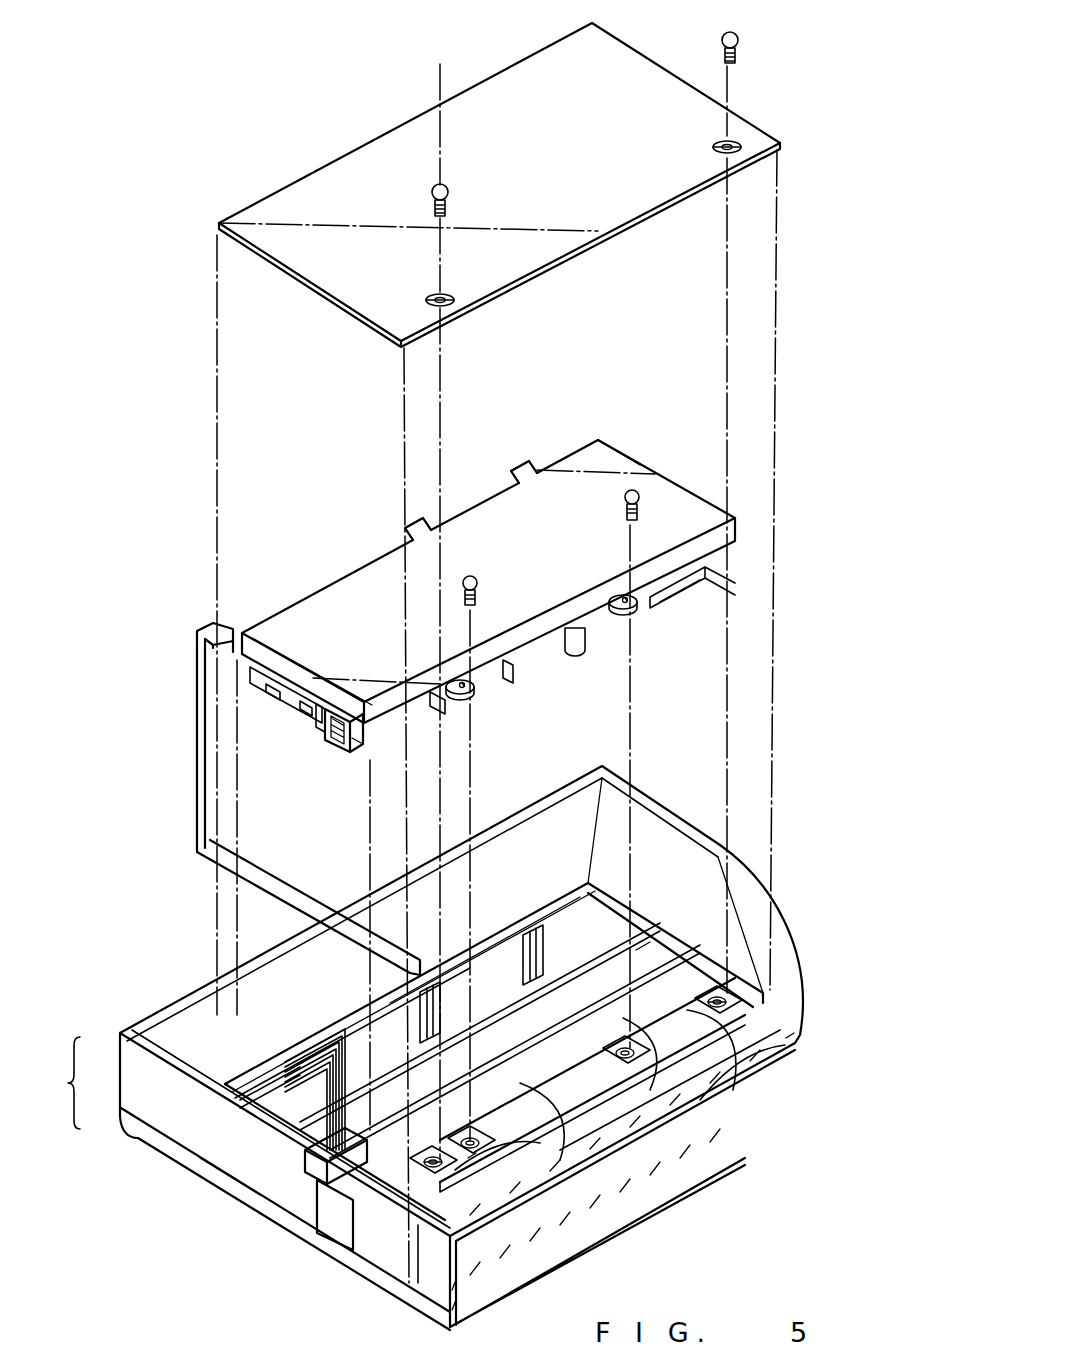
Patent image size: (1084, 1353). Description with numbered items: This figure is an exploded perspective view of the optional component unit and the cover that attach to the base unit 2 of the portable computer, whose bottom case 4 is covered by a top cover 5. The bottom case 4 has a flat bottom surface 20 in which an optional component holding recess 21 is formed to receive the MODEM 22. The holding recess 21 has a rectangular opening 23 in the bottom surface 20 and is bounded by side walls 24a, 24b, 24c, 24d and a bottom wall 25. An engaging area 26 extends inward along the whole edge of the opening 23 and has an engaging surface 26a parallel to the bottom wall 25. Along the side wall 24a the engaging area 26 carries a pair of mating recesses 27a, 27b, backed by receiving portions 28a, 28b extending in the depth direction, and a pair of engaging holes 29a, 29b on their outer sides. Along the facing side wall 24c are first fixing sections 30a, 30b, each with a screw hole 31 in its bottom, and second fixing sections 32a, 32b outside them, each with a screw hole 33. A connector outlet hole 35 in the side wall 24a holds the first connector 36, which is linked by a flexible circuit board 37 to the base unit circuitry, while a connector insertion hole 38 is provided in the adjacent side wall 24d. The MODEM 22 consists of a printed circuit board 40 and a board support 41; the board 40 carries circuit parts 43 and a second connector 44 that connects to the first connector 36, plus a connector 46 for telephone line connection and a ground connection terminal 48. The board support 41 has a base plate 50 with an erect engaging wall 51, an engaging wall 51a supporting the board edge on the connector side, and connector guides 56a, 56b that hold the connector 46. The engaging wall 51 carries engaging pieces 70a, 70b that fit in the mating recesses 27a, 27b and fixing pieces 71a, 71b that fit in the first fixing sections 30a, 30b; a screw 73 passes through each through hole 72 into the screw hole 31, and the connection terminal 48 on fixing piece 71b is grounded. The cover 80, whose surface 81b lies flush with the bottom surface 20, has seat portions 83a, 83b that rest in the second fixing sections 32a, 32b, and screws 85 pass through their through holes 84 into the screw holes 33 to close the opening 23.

The base unit 2 is at (60, 1083).
The bottom case 4 is at (120, 1063).
The top cover 5 is at (120, 1115).
The bottom surface 20 is at (280, 967).
The optional component holding recess 21 is at (645, 950).
The MODEM 22 is at (656, 466).
The rectangular opening 23 is at (672, 950).
The side wall 24a is at (505, 955).
The side wall 24b is at (687, 973).
The side wall 24c is at (592, 1165).
The side wall 24d is at (282, 1213).
The bottom wall 25 is at (725, 1095).
The engaging area 26 is at (612, 880).
The engaging surface 26a is at (755, 1055).
The mating recess 27a is at (535, 930).
The mating recess 27b is at (432, 988).
The receiving portion 28a is at (478, 1028).
The receiving portion 28b is at (470, 1045).
The engaging hole 29a is at (572, 893).
The engaging hole 29b is at (262, 1086).
The first fixing section 30a is at (628, 1062).
The first fixing section 30b is at (476, 1153).
The screw hole 31 is at (522, 1112).
The second fixing section 32a is at (790, 1036).
The second fixing section 32b is at (476, 1160).
The screw hole 33 is at (434, 1170).
The connector outlet hole 35 is at (360, 1037).
The first connector 36 is at (312, 1158).
The flexible circuit board 37 is at (265, 1115).
The connector insertion hole 38 is at (338, 1240).
The printed circuit board 40 is at (303, 714).
The board support 41 is at (600, 442).
The circuit parts 43 is at (580, 650).
The second connector 44 is at (270, 698).
The connector for telephone line connection 46 is at (345, 754).
The connection terminal 48 is at (446, 710).
The base plate 50 is at (352, 592).
The engaging wall 51 is at (512, 672).
The engaging wall 51a is at (300, 668).
The connector guide 56a is at (358, 755).
The connector guide 56b is at (320, 716).
The engaging piece 70a is at (527, 463).
The engaging piece 70b is at (418, 528).
The fixing piece 71a is at (632, 611).
The fixing piece 71b is at (472, 696).
The through hole 72 is at (465, 682).
The screw 73 is at (474, 579).
The cover 80 is at (438, 97).
The surface 81b is at (640, 62).
The seat portion 83a is at (741, 144).
The seat portion 83b is at (447, 296).
The through hole 84 is at (722, 155).
The screw 85 is at (740, 37).